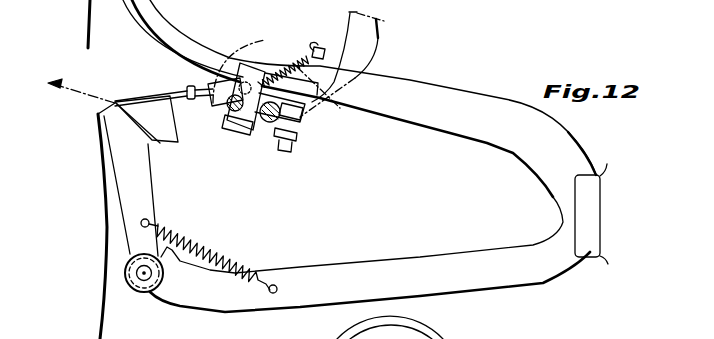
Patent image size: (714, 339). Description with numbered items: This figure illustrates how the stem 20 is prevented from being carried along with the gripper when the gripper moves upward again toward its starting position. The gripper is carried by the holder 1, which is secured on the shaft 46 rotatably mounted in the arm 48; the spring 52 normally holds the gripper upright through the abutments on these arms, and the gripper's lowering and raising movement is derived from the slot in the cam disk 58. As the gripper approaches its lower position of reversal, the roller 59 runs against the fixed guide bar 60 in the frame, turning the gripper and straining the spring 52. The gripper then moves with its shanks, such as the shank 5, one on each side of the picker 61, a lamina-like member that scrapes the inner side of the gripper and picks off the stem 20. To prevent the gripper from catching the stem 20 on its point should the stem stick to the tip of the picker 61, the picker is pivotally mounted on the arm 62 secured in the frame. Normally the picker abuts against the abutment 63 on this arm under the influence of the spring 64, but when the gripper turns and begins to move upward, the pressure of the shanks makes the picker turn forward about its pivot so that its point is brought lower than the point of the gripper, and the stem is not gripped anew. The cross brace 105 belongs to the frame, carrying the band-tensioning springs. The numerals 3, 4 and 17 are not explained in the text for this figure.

The holder 1 is at (297, 134).
The blade 3 is at (137, 98).
The wedge block 4 is at (171, 143).
The shank 5 is at (153, 109).
The clamp screw 17 is at (190, 90).
The stem 20 is at (102, 221).
The shaft 46 is at (266, 124).
The arm 48 is at (381, 36).
The spring 52 is at (307, 47).
The cam disk 58 is at (462, 337).
The roller 59 is at (230, 67).
The guide bar 60 is at (195, 59).
The picker 61 is at (143, 179).
The arm 62 is at (313, 270).
The abutment 63 is at (173, 248).
The spring 64 is at (214, 250).
The cross brace 105 is at (606, 193).